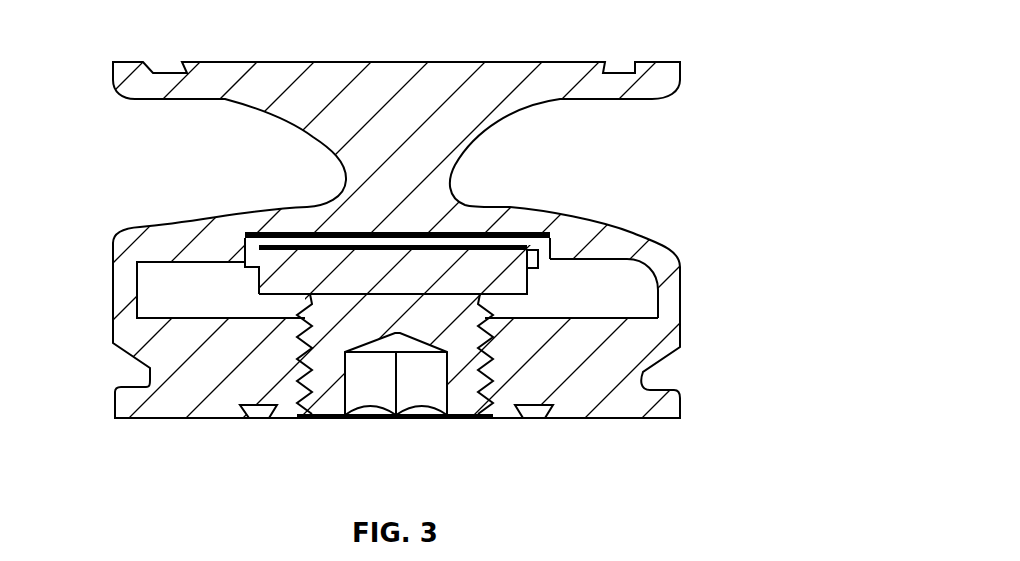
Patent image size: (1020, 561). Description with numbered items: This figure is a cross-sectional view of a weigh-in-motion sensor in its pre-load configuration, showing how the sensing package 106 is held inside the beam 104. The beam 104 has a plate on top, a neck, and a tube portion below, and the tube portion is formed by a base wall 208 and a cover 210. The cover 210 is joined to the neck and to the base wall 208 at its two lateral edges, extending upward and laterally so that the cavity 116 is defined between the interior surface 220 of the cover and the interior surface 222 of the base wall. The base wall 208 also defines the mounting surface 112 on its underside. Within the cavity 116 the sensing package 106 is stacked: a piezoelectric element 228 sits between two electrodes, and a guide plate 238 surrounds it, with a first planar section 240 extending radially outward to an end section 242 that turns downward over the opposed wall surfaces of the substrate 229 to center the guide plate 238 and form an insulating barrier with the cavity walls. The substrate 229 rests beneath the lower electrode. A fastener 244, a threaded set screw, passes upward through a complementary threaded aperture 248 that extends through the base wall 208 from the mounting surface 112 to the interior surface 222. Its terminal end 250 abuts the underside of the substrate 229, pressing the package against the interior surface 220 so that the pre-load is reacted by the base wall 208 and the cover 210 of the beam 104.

The beam 104 is at (541, 84).
The sensing package 106 is at (392, 293).
The mounting surface 112 is at (206, 420).
The cavity 116 is at (632, 282).
The base wall 208 is at (660, 327).
The cover 210 is at (611, 238).
The interior surface of the cover 220 is at (546, 238).
The interior surface of the base wall 222 is at (612, 316).
The piezoelectric element 228 is at (383, 226).
The substrate 229 is at (507, 268).
The guide plate 238 is at (289, 220).
The first planar section 240 is at (494, 240).
The end section 242 is at (246, 259).
The fastener 244 is at (335, 352).
The aperture 248 is at (481, 380).
The terminal end 250 is at (316, 260).